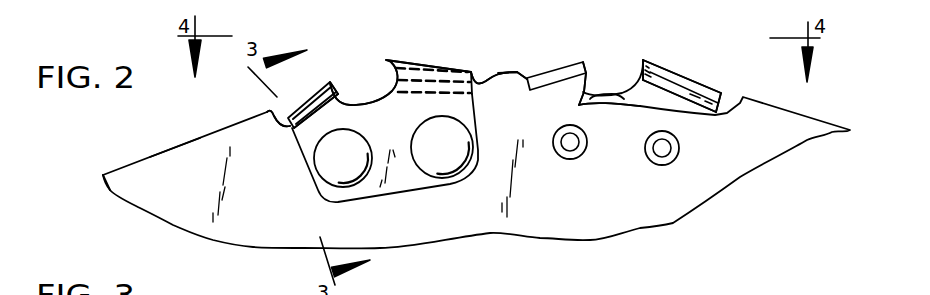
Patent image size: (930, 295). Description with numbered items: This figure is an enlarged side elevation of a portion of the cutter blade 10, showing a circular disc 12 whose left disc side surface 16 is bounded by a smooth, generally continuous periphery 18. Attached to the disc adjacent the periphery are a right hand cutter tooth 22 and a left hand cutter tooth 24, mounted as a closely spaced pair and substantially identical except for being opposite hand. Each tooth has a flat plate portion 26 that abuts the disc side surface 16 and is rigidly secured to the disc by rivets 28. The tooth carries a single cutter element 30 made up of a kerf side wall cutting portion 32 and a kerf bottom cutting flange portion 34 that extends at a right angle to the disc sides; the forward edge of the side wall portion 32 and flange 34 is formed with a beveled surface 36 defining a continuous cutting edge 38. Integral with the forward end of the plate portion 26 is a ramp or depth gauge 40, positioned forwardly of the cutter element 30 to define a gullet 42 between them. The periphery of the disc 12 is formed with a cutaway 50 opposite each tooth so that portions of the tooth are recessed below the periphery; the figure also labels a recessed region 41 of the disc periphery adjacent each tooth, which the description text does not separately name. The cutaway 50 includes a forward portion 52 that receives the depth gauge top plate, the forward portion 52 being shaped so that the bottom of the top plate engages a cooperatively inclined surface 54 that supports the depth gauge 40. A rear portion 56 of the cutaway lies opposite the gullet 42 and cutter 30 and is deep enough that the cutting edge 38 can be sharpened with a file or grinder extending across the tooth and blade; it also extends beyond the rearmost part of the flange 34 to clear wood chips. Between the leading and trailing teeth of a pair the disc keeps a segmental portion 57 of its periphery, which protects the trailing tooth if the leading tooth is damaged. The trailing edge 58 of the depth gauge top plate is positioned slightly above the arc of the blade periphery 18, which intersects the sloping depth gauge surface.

The cutter blade 10 is at (88, 130).
The circular disc 12 is at (553, 225).
The left disc side surface 16 is at (138, 172).
The periphery 18 is at (175, 145).
The right hand cutter tooth 22 is at (701, 61).
The left hand cutter tooth 24 is at (408, 56).
The flat plate portion 26 is at (397, 176).
The rivets 28 is at (421, 135).
The cutter element 30 is at (446, 68).
The kerf side wall cutting portion 32 is at (722, 89).
The flange portion 34 is at (680, 97).
The beveled surface 36 is at (648, 68).
The cutting edge 38 is at (643, 61).
The depth gauge 40 is at (304, 99).
The recess 41 is at (378, 95).
The gullet 42 is at (326, 103).
The cutaway 50 is at (603, 98).
The forward portion of cutaway 52 is at (269, 113).
The inclined surface 54 is at (547, 78).
The rear portion of cutaway 56 is at (583, 91).
The segmental portion of disc periphery 57 is at (500, 72).
The trailing edge of depth gauge top plate 58 is at (330, 80).